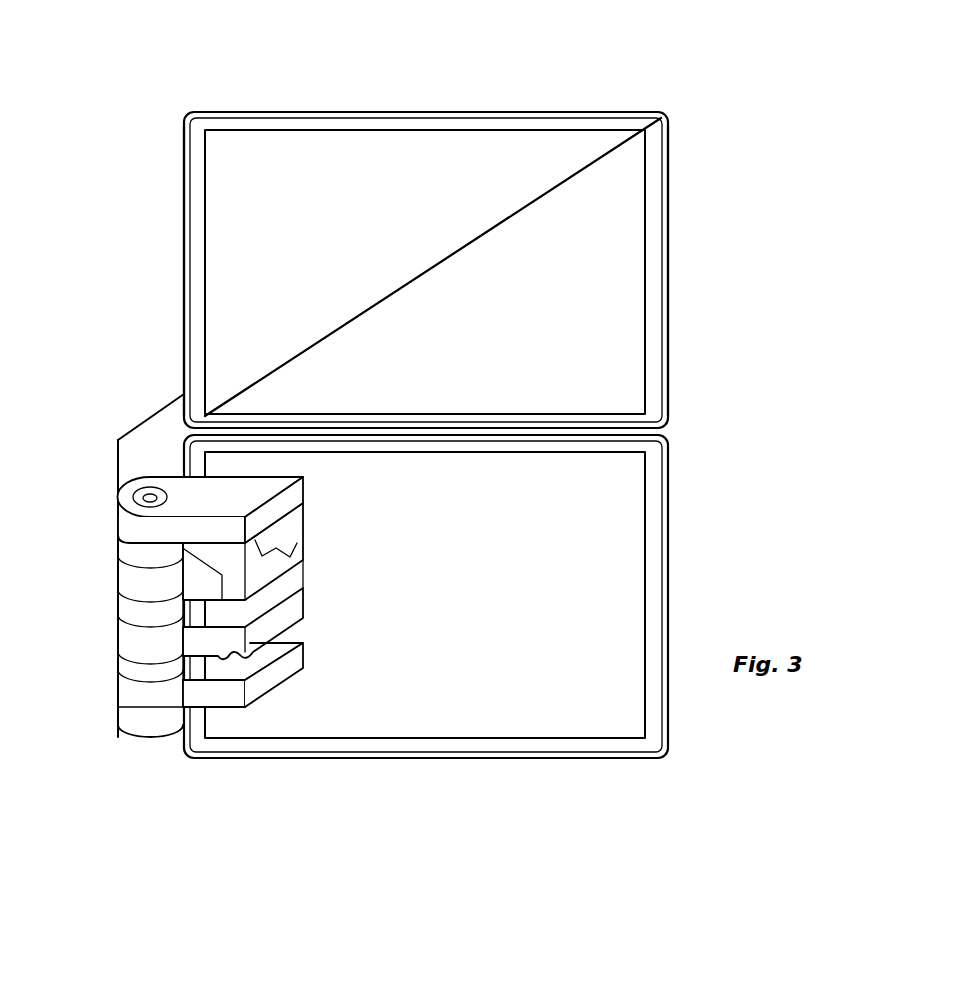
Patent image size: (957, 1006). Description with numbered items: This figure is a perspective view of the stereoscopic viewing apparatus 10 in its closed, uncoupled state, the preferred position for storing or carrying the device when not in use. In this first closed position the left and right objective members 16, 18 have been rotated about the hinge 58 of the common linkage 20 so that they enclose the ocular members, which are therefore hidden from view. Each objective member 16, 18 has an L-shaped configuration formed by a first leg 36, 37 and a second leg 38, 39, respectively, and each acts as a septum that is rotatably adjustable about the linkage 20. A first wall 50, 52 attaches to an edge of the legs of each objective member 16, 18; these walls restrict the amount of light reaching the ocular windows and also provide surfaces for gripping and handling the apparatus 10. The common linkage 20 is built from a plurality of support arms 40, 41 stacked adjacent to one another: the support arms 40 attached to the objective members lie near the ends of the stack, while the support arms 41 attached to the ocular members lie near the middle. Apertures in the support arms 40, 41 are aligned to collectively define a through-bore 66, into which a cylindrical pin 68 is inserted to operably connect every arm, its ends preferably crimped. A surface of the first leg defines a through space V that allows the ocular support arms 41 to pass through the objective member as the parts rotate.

The viewing apparatus 10 is at (196, 815).
The left objective member 16 is at (357, 110).
The right objective member 18 is at (579, 759).
The common linkage 20 is at (96, 714).
The first leg 36 is at (184, 237).
The first leg 37 is at (507, 746).
The second leg 38 is at (420, 110).
The second leg 39 is at (668, 373).
The support arm 40 is at (238, 502).
The support arm 41 is at (214, 599).
The first wall 50 is at (340, 248).
The first wall 52 is at (530, 341).
The hinge 58 is at (96, 601).
The through-bore 66 is at (140, 500).
The cylindrical pin 68 is at (128, 486).
The through space V is at (305, 568).